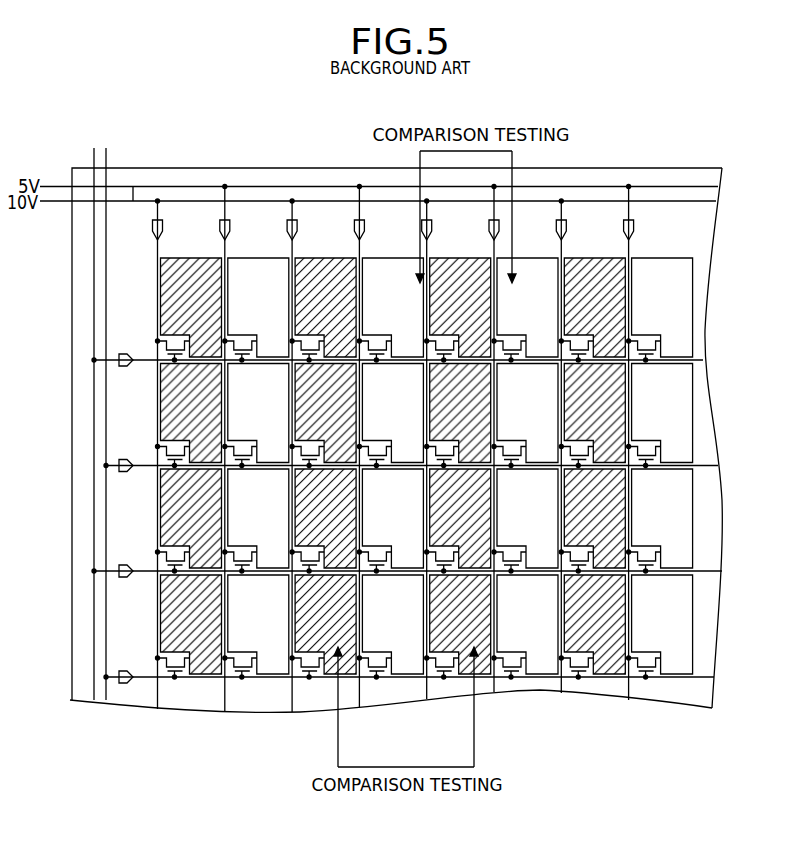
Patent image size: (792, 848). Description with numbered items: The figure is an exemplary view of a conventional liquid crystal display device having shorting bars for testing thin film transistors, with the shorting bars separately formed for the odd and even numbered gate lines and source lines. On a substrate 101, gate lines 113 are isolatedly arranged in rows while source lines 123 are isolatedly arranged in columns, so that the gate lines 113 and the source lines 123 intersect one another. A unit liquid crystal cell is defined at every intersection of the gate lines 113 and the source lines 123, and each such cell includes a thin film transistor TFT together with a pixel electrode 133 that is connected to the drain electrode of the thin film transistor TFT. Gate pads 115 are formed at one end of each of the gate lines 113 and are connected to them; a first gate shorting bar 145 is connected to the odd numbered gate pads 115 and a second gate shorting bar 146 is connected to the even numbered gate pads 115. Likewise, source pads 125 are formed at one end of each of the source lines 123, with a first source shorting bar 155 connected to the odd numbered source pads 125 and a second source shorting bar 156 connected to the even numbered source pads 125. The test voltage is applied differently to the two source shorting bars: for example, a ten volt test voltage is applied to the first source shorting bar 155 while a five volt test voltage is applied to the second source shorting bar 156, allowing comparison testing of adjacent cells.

The substrate 101 is at (694, 156).
The gate lines 113 is at (703, 361).
The gate pads 115 is at (124, 353).
The source lines 123 is at (158, 709).
The source pads 125 is at (164, 229).
The pixel electrode 133 is at (683, 267).
The first gate shorting bar 145 is at (94, 243).
The second gate shorting bar 146 is at (106, 283).
The first source shorting bar 155 is at (134, 188).
The second source shorting bar 156 is at (190, 185).
The thin film transistor TFT is at (655, 436).